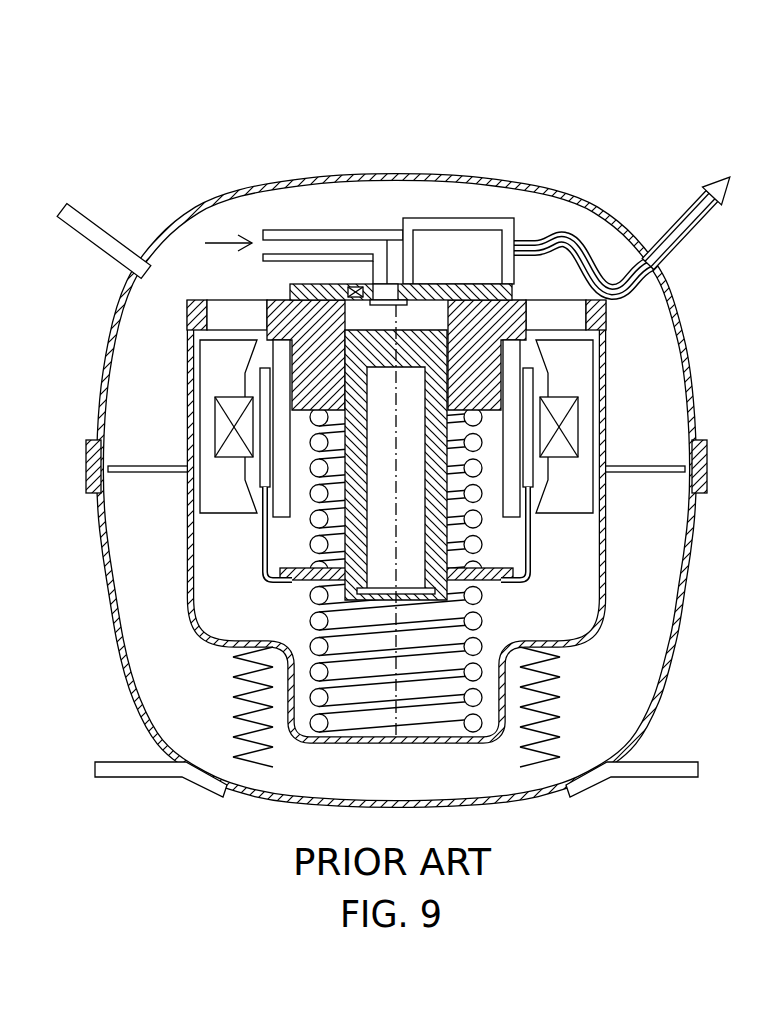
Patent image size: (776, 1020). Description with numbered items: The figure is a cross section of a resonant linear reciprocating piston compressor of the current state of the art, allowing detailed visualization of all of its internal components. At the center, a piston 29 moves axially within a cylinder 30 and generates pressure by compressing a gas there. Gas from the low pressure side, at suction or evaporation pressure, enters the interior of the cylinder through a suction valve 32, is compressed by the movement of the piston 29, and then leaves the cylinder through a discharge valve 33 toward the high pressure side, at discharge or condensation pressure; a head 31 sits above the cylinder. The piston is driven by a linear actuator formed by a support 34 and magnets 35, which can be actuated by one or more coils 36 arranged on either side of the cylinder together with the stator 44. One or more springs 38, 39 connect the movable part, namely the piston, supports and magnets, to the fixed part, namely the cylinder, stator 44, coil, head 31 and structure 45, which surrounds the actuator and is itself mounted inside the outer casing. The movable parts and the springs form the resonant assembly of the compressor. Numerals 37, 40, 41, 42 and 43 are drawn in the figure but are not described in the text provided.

The piston 29 is at (407, 348).
The cylinder 30 is at (473, 327).
The head 31 is at (442, 210).
The suction valve 32 is at (378, 282).
The discharge valve 33 is at (440, 272).
The support 34 is at (250, 560).
The magnets 35 is at (265, 440).
The coils 36 is at (234, 424).
The discharge tube 37 is at (573, 237).
The spring 38 is at (494, 525).
The spring 39 is at (493, 627).
The valve plate 40 is at (346, 273).
The inlet tube 41 is at (89, 190).
The outlet tube 42 is at (660, 228).
The hermetic shell 43 is at (189, 190).
The stator 44 is at (585, 465).
The structure 45 is at (606, 519).